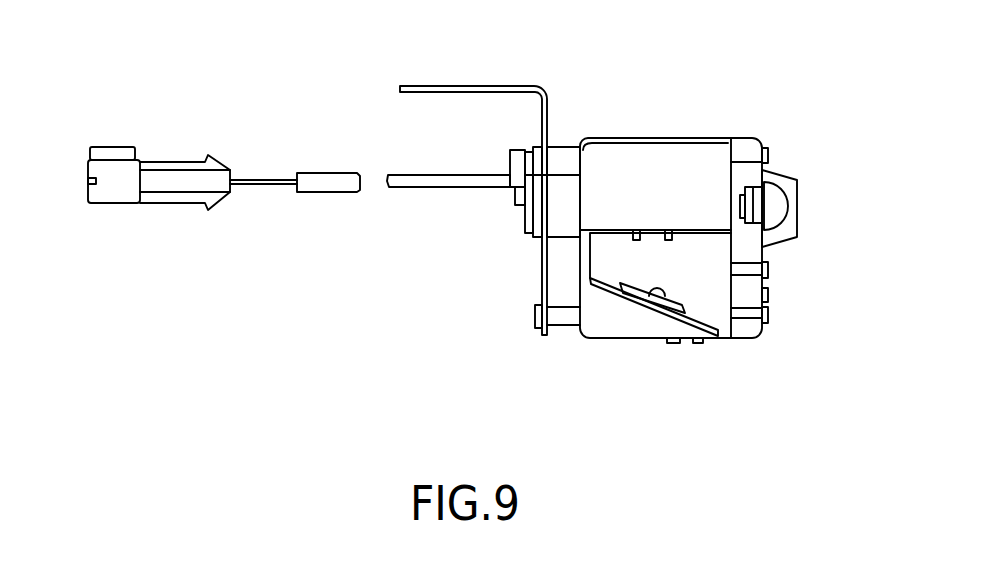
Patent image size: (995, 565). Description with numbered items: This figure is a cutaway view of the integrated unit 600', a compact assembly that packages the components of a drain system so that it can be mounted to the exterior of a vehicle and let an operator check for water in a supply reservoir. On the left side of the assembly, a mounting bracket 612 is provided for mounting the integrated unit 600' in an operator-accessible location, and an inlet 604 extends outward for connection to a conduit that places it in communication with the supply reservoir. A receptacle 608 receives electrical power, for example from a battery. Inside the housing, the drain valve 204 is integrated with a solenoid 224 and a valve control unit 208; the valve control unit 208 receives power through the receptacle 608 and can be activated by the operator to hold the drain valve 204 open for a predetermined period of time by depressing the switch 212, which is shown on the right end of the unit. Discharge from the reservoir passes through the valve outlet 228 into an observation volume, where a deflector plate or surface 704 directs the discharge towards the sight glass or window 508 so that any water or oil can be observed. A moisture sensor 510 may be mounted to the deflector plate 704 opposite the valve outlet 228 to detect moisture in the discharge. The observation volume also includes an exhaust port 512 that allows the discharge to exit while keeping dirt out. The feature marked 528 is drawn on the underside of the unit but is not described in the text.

The mounting bracket 612 is at (492, 86).
The inlet 604 is at (515, 220).
The receptacle for receiving electrical power 608 is at (510, 158).
The drain valve 204 is at (600, 148).
The valve control unit 208 is at (600, 148).
The solenoid 224 is at (558, 187).
The integrated unit 600' is at (674, 198).
The valve outlet 228 is at (660, 228).
The switch 212 is at (798, 200).
The sight glass or window 508 is at (770, 290).
The exhaust port 512 is at (703, 340).
The deflector plate or surface 704 is at (628, 300).
The moisture sensor 510 is at (663, 296).
The snap feet 528 is at (682, 338).